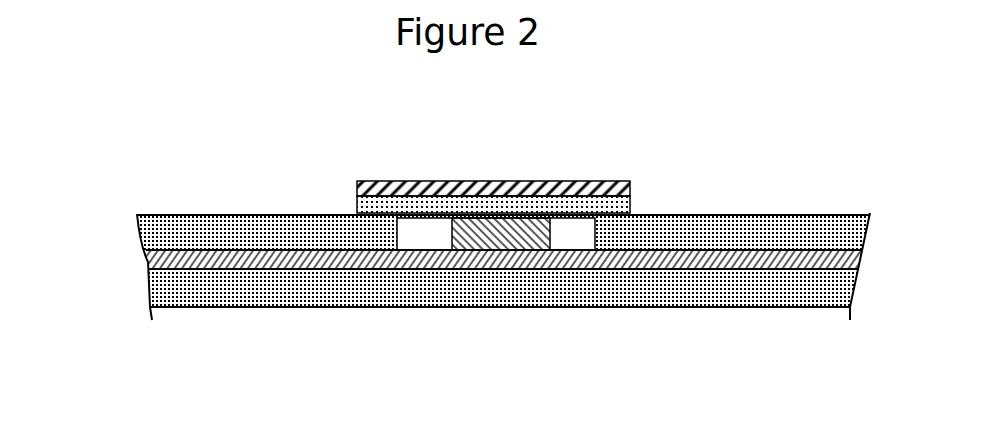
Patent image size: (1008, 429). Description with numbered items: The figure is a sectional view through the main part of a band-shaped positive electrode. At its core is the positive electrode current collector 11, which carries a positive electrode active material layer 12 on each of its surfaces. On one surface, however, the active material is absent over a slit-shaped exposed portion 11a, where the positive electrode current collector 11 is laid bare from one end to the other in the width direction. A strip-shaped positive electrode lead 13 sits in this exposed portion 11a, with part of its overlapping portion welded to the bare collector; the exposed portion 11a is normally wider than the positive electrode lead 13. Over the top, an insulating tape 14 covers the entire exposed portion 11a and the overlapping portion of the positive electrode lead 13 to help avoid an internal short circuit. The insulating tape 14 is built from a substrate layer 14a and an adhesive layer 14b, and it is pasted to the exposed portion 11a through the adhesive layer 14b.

The positive electrode current collector 11 is at (148, 264).
The exposed portion 11a is at (427, 249).
The positive electrode active material layer 12 is at (160, 236).
The positive electrode lead 13 is at (493, 236).
The insulating tape 14 is at (561, 157).
The substrate layer 14a is at (628, 203).
The adhesive layer 14b is at (541, 189).